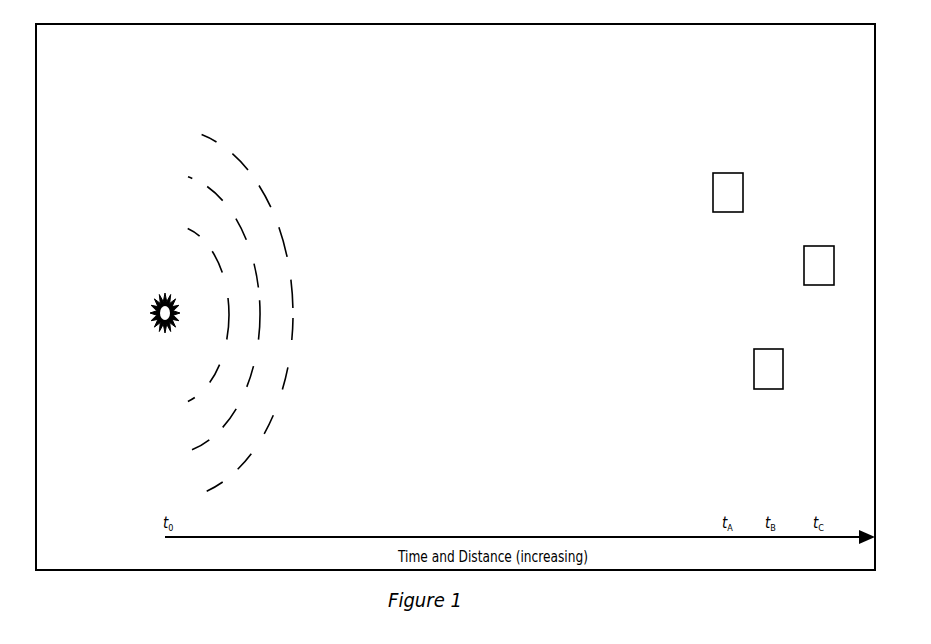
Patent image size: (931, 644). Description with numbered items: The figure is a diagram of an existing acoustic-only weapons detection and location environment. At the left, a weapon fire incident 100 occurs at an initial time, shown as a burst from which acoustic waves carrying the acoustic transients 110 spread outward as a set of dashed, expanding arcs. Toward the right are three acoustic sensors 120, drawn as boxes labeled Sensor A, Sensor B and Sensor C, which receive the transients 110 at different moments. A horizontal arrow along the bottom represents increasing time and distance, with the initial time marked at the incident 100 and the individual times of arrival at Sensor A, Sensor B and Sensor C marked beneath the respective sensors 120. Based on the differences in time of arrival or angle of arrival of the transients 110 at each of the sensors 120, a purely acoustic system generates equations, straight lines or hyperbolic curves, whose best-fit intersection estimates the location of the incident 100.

The weapon fire incident 100 is at (162, 292).
The acoustic transients 110 is at (261, 299).
The acoustic sensors 120 is at (775, 208).